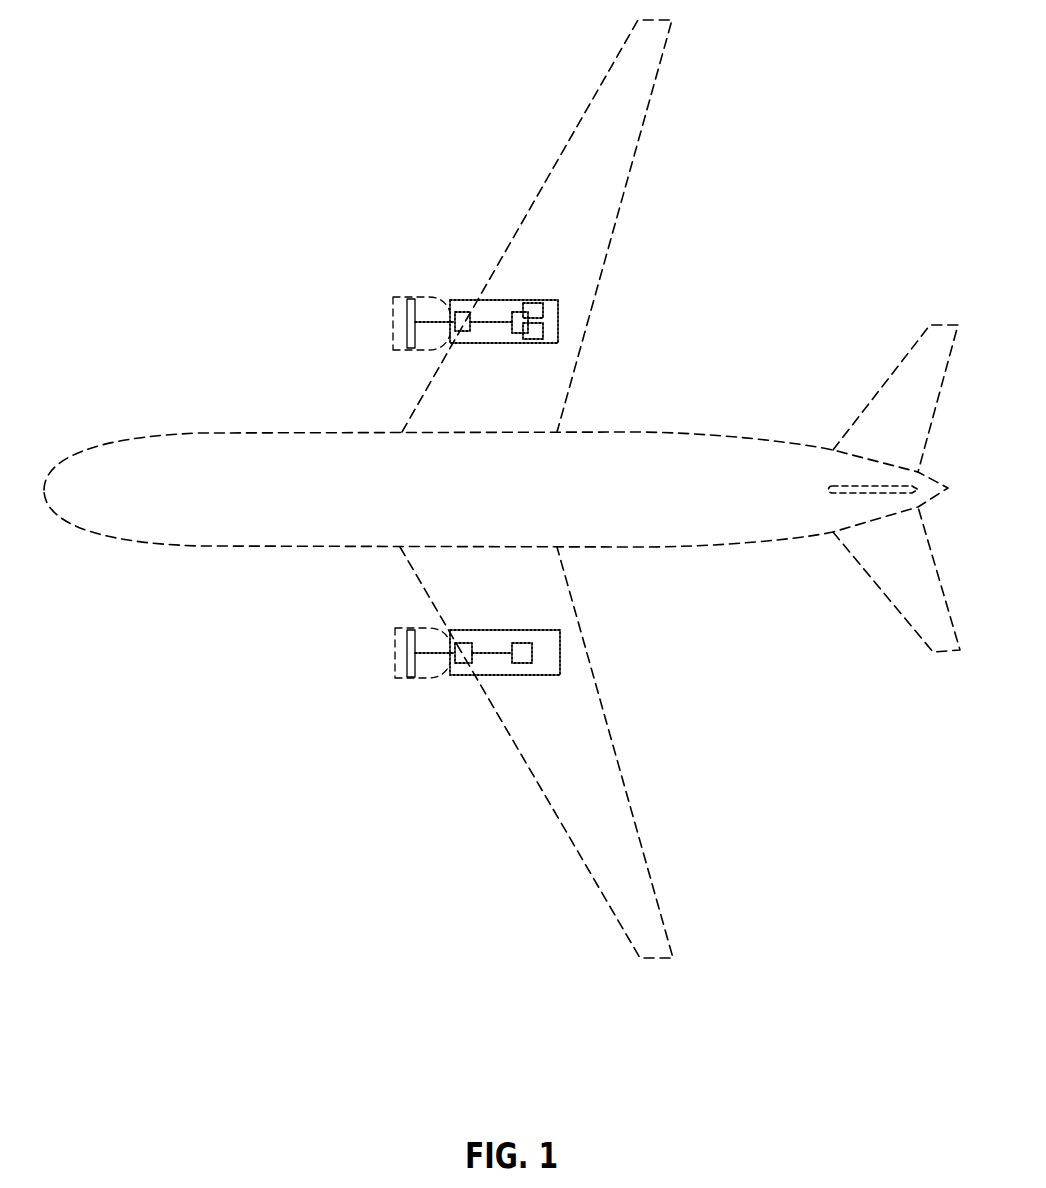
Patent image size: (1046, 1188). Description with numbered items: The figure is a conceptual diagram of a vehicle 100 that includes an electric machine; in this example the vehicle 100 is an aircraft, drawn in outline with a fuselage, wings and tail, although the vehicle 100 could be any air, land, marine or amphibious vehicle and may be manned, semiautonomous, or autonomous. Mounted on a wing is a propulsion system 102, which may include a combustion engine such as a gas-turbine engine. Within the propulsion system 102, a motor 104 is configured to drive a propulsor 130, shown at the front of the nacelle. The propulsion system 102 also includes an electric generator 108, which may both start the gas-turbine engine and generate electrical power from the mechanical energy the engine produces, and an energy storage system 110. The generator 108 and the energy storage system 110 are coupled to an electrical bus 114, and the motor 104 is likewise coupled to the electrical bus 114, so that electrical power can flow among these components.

The vehicle 100 is at (812, 118).
The propulsion system 102 is at (454, 310).
The motor 104 is at (458, 332).
The electric generator 108 is at (543, 336).
The energy storage system 110 is at (530, 303).
The electrical bus 114 is at (504, 323).
The propulsor 130 is at (410, 348).